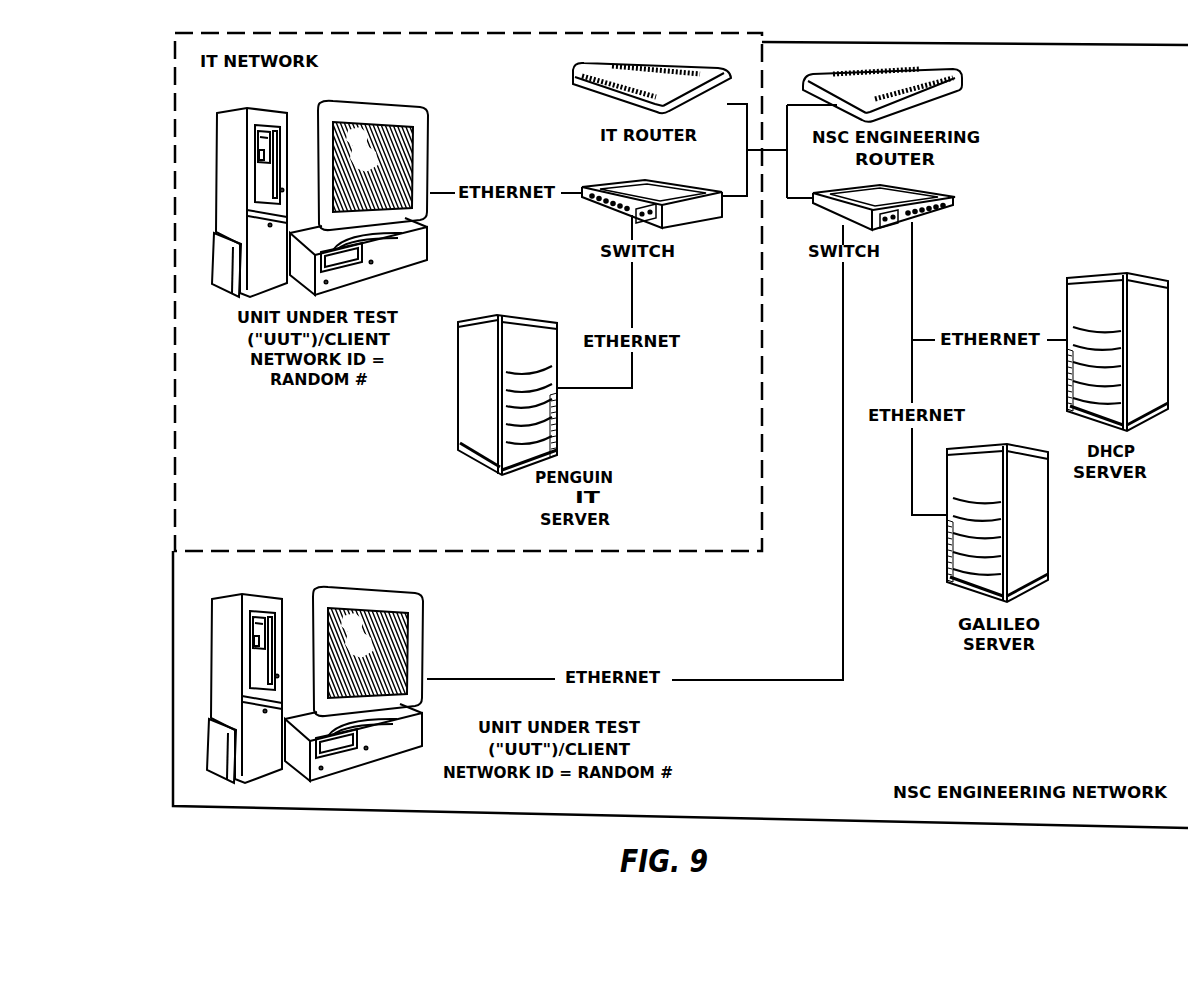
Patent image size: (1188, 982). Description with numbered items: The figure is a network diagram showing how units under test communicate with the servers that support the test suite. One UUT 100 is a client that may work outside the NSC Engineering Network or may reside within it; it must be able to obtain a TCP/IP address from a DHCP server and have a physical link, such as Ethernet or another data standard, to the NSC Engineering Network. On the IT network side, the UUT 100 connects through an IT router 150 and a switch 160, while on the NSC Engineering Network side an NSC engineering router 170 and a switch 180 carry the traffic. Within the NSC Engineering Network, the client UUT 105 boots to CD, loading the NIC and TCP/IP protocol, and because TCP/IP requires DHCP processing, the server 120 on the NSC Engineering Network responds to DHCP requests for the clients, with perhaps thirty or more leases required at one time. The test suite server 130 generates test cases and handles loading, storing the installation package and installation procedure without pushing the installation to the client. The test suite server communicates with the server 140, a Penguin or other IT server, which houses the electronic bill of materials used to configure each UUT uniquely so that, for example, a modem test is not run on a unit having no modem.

The UUT 100 is at (378, 103).
The client UUT 105 is at (430, 610).
The server 120 is at (1085, 277).
The test suite server 130 is at (947, 550).
The server 140 is at (458, 406).
The IT router 150 is at (572, 85).
The IT network switch 160 is at (602, 208).
The NSC engineering router 170 is at (957, 83).
The NSC engineering switch 180 is at (953, 197).